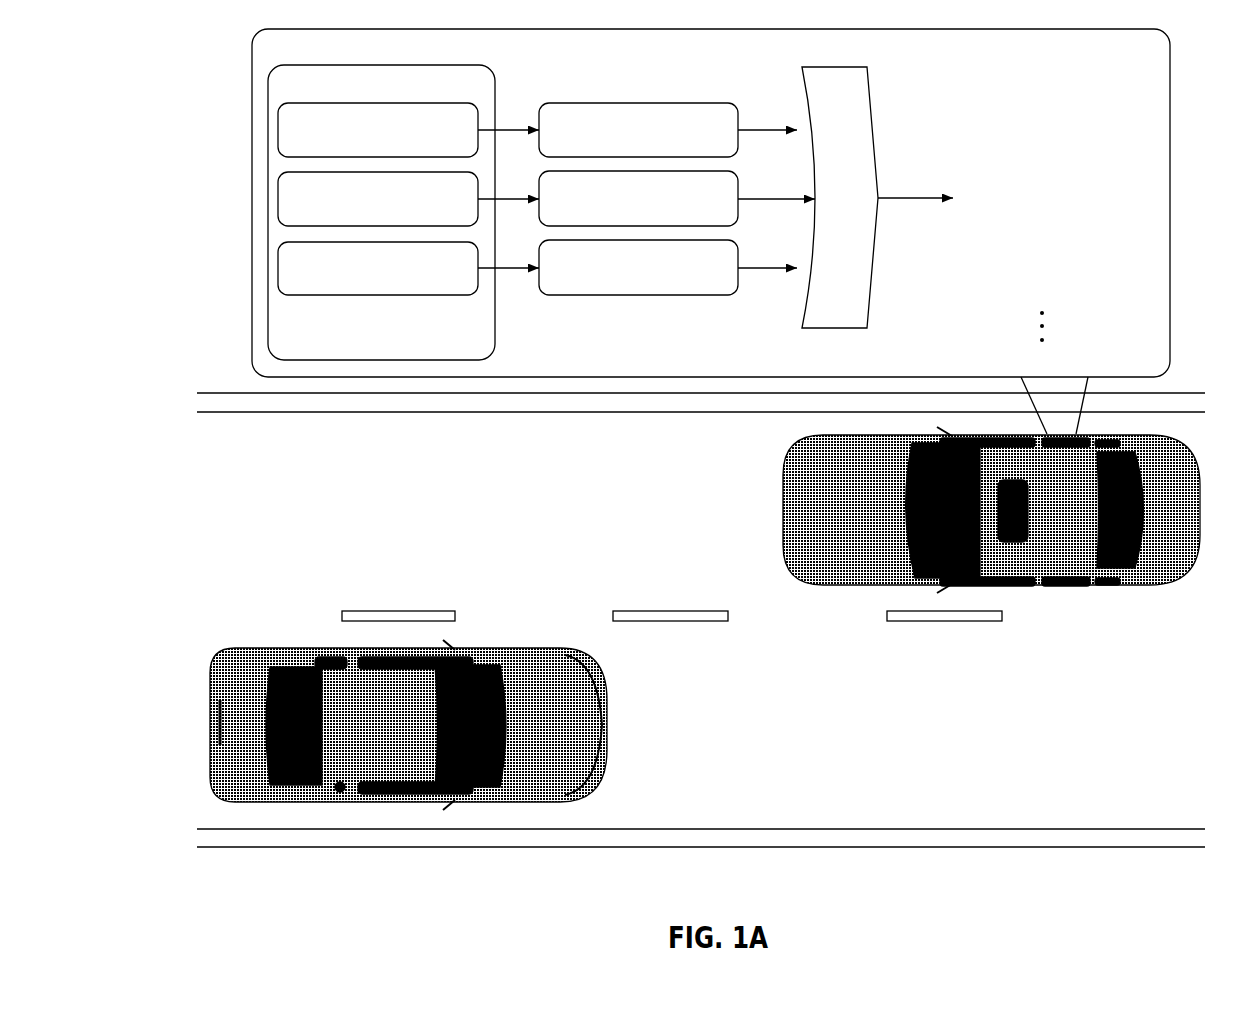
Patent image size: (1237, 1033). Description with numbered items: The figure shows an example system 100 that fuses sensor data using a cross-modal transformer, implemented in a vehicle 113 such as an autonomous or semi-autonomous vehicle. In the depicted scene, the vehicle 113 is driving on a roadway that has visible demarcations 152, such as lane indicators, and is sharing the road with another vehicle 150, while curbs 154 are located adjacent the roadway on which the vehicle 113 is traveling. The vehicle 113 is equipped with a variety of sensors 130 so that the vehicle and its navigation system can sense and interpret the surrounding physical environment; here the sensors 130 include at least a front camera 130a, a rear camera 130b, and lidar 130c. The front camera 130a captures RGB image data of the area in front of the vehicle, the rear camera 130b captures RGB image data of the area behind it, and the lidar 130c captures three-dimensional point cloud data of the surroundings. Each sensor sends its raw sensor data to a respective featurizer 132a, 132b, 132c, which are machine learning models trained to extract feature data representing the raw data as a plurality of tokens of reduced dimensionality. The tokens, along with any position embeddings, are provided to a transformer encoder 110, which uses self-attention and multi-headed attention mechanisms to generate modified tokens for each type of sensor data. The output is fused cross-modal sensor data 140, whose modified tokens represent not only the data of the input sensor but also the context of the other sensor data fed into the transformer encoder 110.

The system 100 is at (1117, 66).
The sensors 130 is at (435, 96).
The front camera 130a is at (468, 141).
The rear camera 130b is at (465, 210).
The lidar 130c is at (426, 279).
The featurizer 132a is at (711, 141).
The featurizer 132b is at (713, 210).
The featurizer 132c is at (711, 279).
The transformer encoder 110 is at (858, 211).
The fused cross-modal sensor data 140 is at (1115, 226).
The vehicle 113 is at (1122, 590).
The another vehicle 150 is at (620, 710).
The demarcations 152 is at (433, 607).
The curbs 154 is at (522, 413).